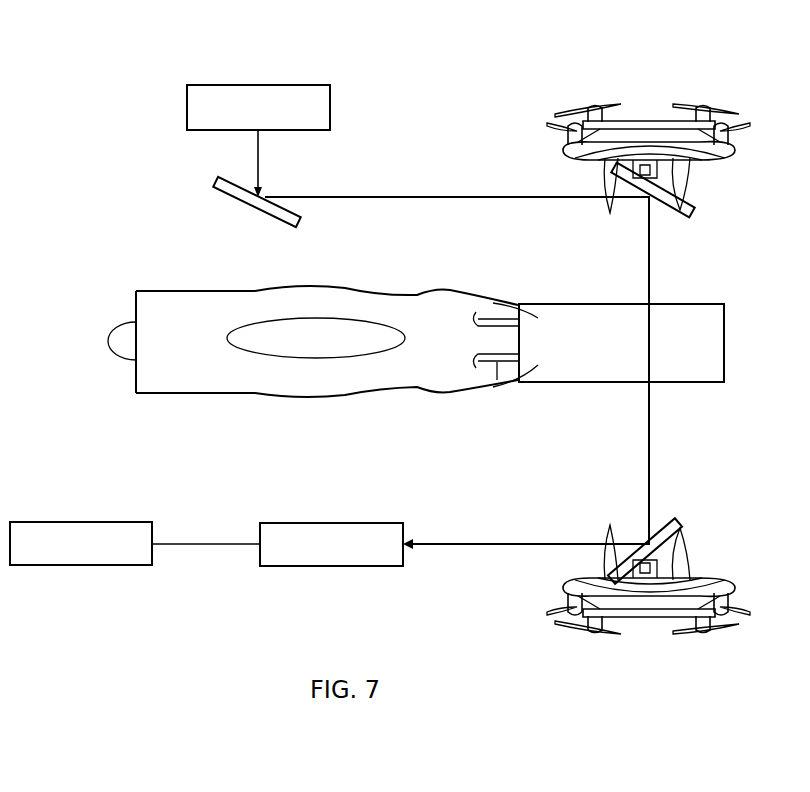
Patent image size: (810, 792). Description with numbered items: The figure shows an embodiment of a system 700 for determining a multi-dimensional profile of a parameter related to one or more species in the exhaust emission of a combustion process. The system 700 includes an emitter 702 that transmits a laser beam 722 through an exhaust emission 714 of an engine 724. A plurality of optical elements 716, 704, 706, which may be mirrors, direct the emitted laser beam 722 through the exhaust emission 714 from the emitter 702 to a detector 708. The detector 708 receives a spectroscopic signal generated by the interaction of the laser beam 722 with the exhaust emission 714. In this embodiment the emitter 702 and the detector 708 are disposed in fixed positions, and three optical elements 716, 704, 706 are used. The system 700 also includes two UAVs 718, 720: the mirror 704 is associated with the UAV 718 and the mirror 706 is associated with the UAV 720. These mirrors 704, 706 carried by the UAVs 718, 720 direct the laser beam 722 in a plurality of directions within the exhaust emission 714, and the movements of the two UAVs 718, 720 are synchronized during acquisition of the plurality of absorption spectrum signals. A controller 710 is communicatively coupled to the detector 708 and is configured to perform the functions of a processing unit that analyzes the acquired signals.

The system 700 is at (134, 38).
The emitter 702 is at (187, 104).
The mirror 704 is at (690, 214).
The mirror 706 is at (673, 522).
The detector 708 is at (333, 567).
The controller 710 is at (83, 566).
The exhaust emission 714 is at (660, 360).
The optical element 716 is at (216, 178).
The UAV 718 is at (648, 179).
The UAV 720 is at (648, 560).
The laser beam 722 is at (266, 152).
The engine 724 is at (380, 285).